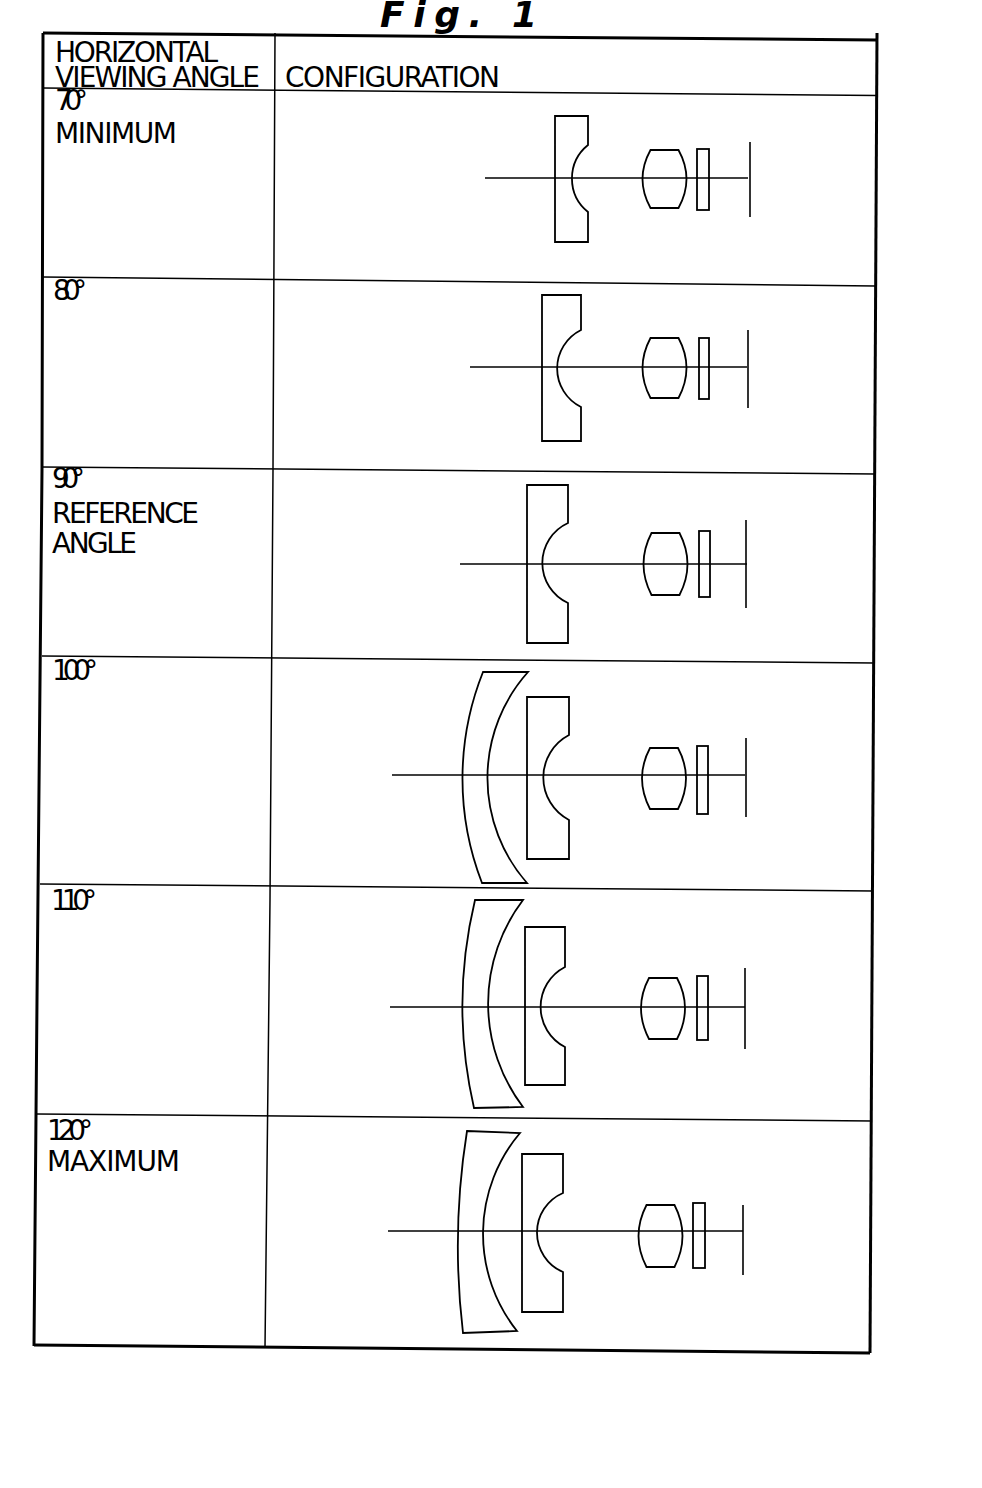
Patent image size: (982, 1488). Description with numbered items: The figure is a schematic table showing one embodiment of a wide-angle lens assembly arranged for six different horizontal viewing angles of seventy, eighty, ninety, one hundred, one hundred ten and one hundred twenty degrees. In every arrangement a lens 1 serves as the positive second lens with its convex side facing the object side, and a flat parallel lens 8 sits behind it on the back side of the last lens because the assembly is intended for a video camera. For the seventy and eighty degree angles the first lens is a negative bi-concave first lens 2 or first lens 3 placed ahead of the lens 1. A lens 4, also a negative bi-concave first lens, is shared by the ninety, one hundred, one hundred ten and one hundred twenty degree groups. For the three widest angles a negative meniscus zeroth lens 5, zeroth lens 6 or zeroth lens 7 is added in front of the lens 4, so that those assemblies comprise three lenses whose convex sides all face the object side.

The lens 1 is at (660, 158).
The first lens 2 is at (565, 142).
The first lens 3 is at (548, 319).
The lens 4 is at (532, 502).
The zeroth lens 5 is at (475, 728).
The zeroth lens 6 is at (470, 957).
The zeroth lens 7 is at (468, 1183).
The flat parallel lens 8 is at (703, 150).